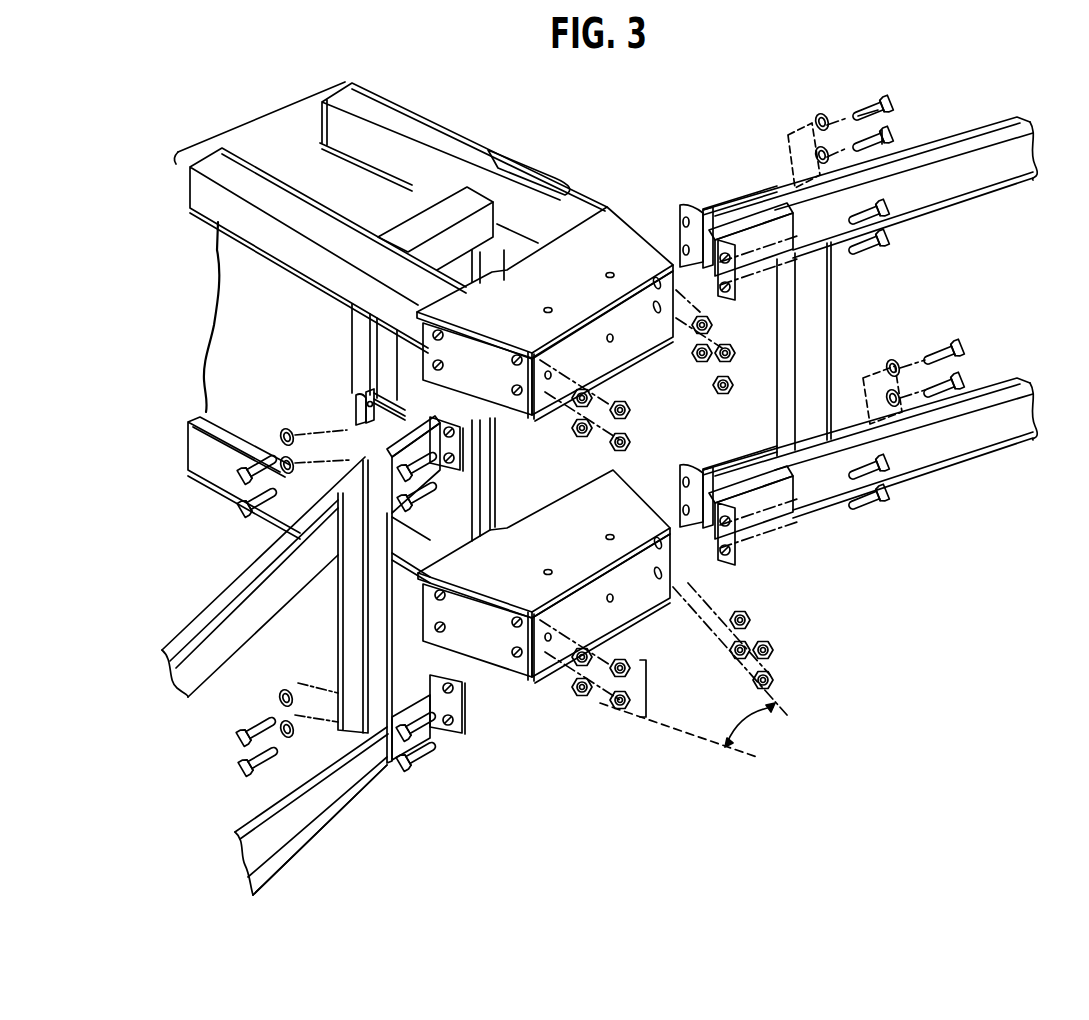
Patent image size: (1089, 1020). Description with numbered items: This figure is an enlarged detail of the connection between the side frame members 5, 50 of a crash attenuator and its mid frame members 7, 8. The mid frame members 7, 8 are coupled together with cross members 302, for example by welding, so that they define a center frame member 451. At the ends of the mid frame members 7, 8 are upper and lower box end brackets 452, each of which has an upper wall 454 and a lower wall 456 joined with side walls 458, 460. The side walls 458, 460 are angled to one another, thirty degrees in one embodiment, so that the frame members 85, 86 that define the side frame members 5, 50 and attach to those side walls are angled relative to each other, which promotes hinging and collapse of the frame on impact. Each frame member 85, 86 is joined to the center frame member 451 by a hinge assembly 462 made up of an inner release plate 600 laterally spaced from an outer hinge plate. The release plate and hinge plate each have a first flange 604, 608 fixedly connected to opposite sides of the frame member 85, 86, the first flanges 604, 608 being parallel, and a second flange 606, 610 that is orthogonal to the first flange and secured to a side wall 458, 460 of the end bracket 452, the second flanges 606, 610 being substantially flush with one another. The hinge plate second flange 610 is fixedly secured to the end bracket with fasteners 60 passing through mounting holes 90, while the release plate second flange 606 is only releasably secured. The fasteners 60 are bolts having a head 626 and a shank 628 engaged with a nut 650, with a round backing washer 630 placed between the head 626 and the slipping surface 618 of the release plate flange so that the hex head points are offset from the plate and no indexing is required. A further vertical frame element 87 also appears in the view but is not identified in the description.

The side frame member 5 is at (962, 468).
The mid frame member 7 is at (427, 120).
The mid frame member 8 is at (218, 212).
The side frame member 50 is at (243, 887).
The fasteners 60 is at (889, 138).
The frame member 85 is at (1022, 414).
The frame member 86 is at (247, 842).
The vertical post 87 is at (800, 350).
The mounting holes 90 is at (737, 272).
The cross members 302 is at (417, 222).
The center frame member 451 is at (260, 108).
The box end bracket 452 is at (610, 220).
The upper wall 454 is at (553, 448).
The lower wall 456 is at (627, 350).
The side wall 458 is at (480, 350).
The side wall 460 is at (643, 283).
The hinge assembly 462 is at (630, 514).
The inner release plate 600 is at (702, 212).
The first flange 604 is at (752, 208).
The second flange 606 is at (684, 207).
The first flange 608 is at (800, 255).
The second flange 610 is at (738, 532).
The slipping surface 618 is at (380, 347).
The head 626 is at (890, 141).
The shank 628 is at (870, 106).
The backing washer 630 is at (815, 154).
The nut 650 is at (578, 402).